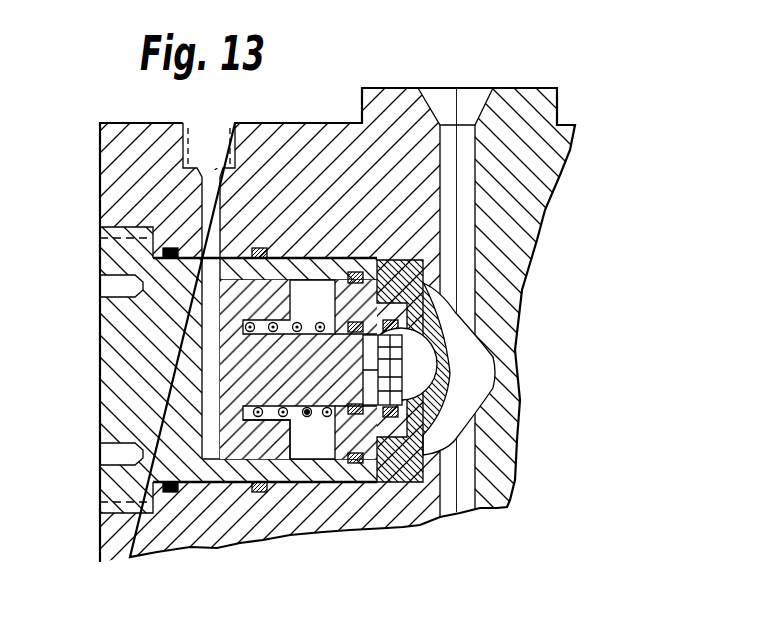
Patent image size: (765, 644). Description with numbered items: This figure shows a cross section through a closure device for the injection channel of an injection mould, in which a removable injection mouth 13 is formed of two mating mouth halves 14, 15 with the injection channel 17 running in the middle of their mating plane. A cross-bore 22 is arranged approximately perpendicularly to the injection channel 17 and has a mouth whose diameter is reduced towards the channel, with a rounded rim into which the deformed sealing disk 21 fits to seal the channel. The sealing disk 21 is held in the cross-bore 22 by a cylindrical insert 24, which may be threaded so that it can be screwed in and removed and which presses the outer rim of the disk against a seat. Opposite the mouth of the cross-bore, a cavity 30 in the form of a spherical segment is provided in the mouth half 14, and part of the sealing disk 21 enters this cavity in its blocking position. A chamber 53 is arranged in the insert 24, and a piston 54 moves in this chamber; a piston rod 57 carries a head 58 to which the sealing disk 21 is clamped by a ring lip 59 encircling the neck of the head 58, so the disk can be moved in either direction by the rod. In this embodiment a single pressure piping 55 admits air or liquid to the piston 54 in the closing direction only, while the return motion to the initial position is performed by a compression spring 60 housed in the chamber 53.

The injection mouth 13 is at (86, 346).
The mouth half 14 is at (388, 107).
The mouth half 15 is at (538, 108).
The injection channel 17 is at (465, 178).
The sealing disk 21 is at (403, 412).
The cross-bore 22 is at (207, 484).
The insert 24 is at (118, 317).
The cavity 30 is at (495, 365).
The chamber 53 is at (208, 386).
The piston 54 is at (276, 442).
The pressure piping 55 is at (207, 138).
The piston rod 57 is at (317, 387).
The head 58 is at (418, 374).
The ring lip 59 is at (400, 330).
The compression spring 60 is at (297, 322).